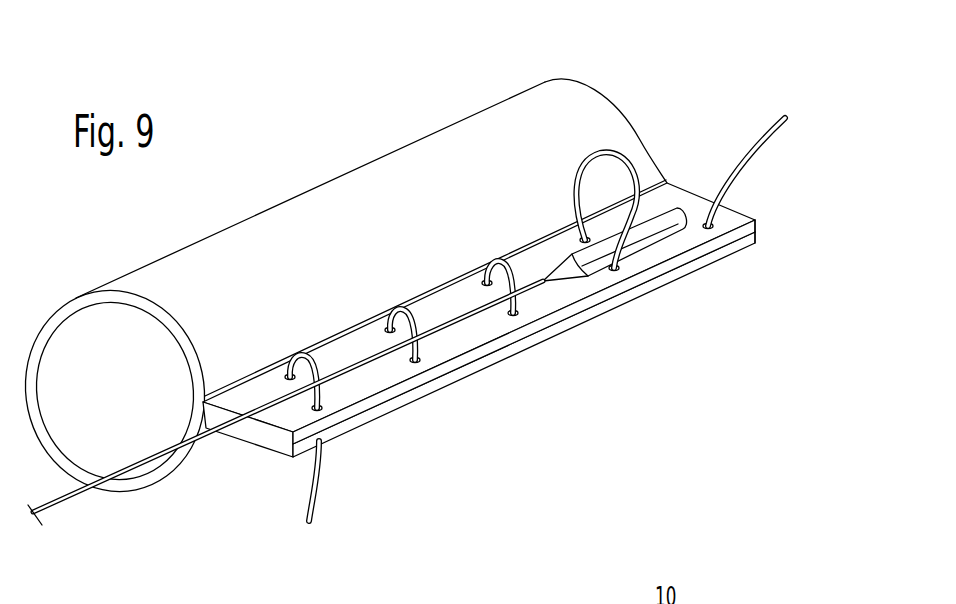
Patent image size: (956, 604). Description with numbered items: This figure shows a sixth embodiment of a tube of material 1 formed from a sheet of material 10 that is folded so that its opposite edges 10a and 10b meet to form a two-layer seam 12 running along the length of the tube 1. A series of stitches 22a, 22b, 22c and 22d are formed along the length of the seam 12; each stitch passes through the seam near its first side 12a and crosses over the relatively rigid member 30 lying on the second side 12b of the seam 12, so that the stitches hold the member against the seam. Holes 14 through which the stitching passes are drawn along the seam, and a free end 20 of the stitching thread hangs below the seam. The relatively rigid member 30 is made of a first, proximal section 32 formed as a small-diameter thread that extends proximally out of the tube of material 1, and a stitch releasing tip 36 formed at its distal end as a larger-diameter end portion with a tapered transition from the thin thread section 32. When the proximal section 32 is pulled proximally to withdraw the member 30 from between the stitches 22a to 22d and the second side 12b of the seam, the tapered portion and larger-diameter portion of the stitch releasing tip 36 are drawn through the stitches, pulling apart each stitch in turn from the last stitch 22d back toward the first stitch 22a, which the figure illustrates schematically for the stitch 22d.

The tube of material 1 is at (276, 188).
The sheet of material 10 is at (604, 90).
The edge of the sheet 10a is at (742, 248).
The edge of the sheet 10b is at (757, 224).
The two-layer seam 12 is at (694, 191).
The first side of the seam 12a is at (664, 292).
The second side of the seam 12b is at (663, 251).
The holes 14 is at (717, 223).
The suture thread end 20 is at (307, 507).
The stitch 22a is at (308, 354).
The stitch 22b is at (401, 310).
The stitch 22c is at (503, 261).
The stitch 22d is at (599, 153).
The relatively rigid member 30 is at (90, 496).
The proximal section 32 is at (50, 514).
The stitch releasing tip 36 is at (600, 257).